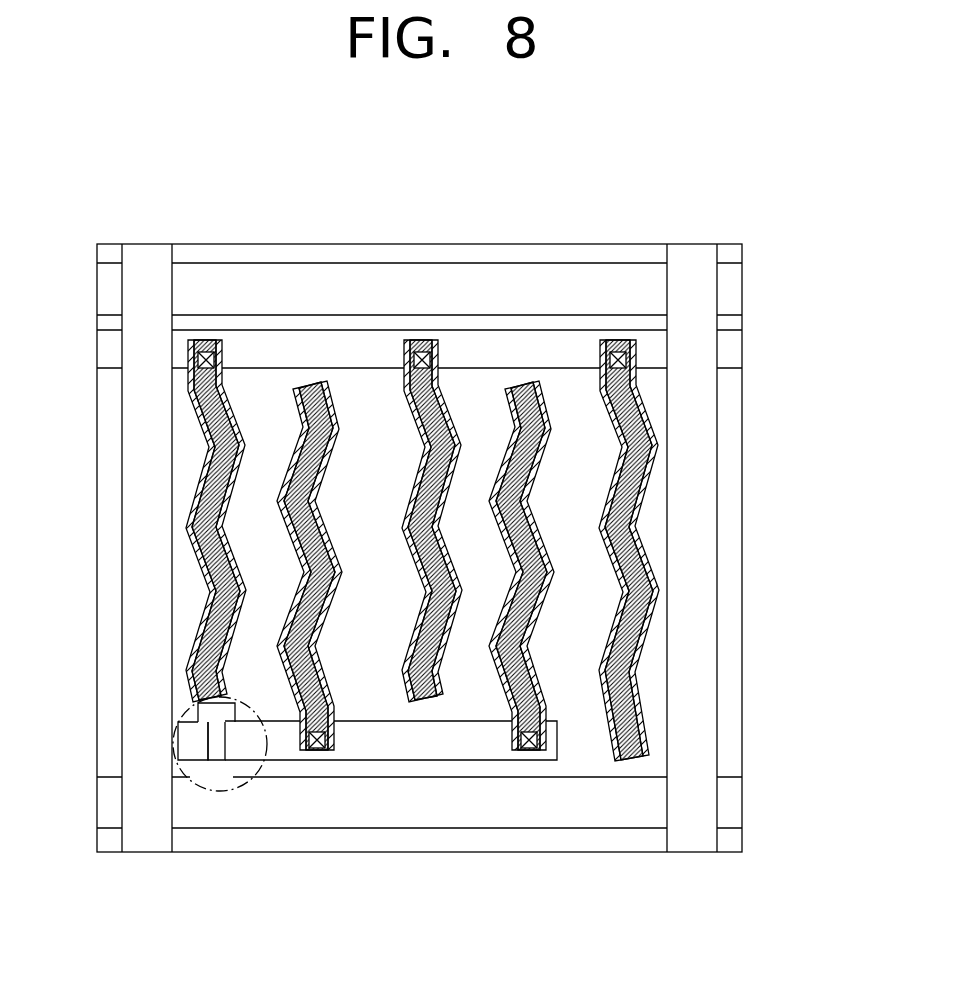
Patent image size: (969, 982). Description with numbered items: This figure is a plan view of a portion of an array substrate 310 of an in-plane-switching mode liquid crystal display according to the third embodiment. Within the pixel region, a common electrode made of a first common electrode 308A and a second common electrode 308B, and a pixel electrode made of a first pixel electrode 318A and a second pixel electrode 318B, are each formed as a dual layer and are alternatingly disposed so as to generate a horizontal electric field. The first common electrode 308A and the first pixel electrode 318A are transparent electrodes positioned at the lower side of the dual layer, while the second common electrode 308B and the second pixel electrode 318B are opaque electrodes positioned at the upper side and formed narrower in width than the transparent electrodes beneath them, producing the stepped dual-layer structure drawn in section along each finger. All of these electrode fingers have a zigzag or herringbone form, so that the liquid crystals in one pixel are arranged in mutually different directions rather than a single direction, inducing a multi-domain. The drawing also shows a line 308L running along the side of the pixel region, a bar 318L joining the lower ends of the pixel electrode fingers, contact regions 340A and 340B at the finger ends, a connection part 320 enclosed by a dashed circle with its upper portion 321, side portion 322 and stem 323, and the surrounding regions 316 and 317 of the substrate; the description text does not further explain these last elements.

The touch screen panel 310 is at (764, 244).
The signal line 308L is at (733, 350).
The vertical line region 317 is at (700, 727).
The horizontal line region 316 is at (610, 810).
The first pixel electrode 318A is at (530, 513).
The second pixel electrode 318B is at (530, 470).
The first contact 340A is at (527, 748).
The second contact 340B is at (617, 352).
The first common electrode 308A is at (637, 642).
The second common electrode 308B is at (650, 603).
The connection line 318L is at (386, 745).
The connection part 320 is at (136, 809).
The upper portion 321 is at (200, 703).
The left flange 322 is at (193, 752).
The stem 323 is at (233, 750).